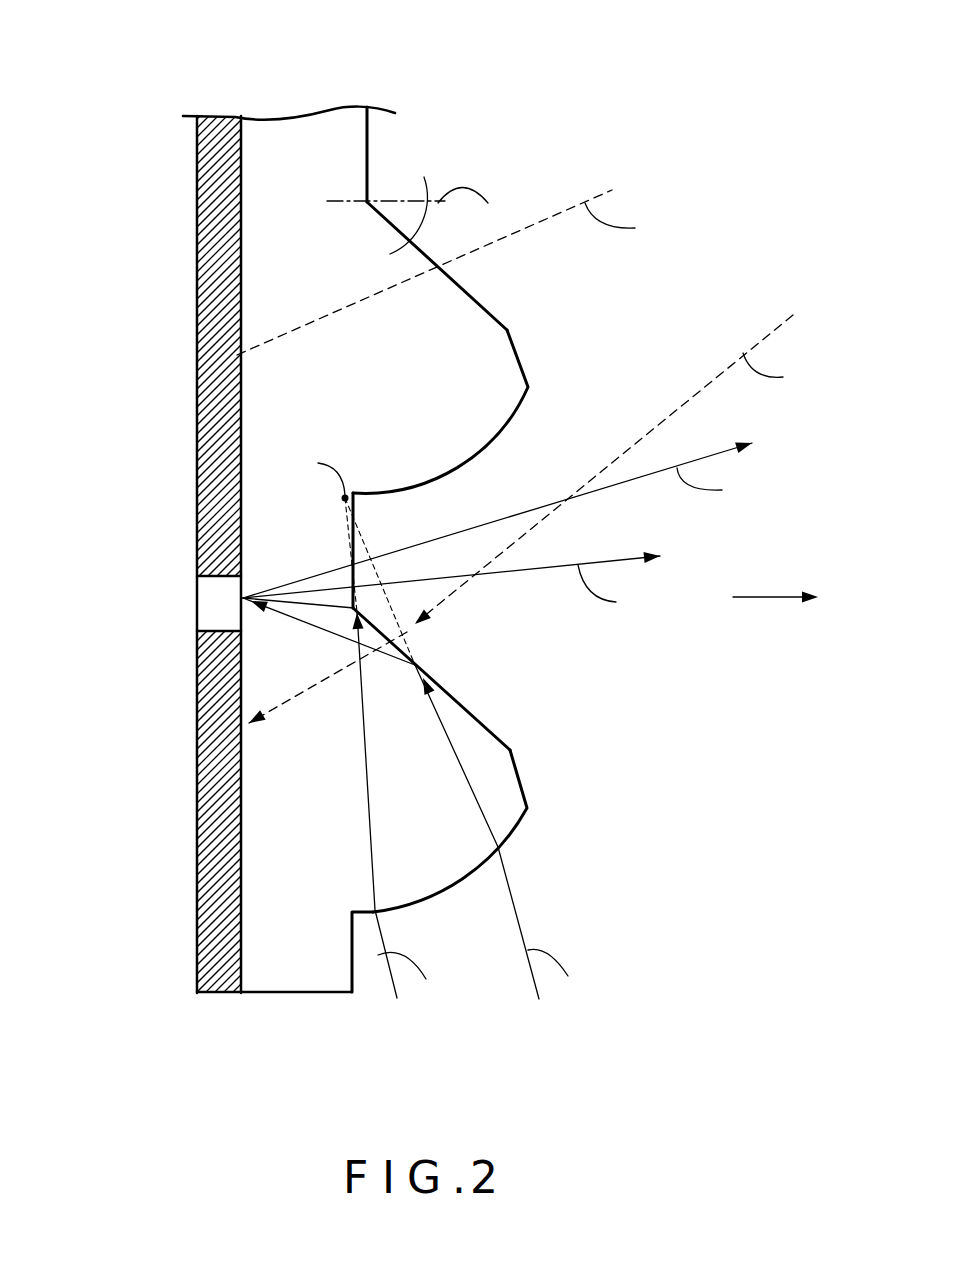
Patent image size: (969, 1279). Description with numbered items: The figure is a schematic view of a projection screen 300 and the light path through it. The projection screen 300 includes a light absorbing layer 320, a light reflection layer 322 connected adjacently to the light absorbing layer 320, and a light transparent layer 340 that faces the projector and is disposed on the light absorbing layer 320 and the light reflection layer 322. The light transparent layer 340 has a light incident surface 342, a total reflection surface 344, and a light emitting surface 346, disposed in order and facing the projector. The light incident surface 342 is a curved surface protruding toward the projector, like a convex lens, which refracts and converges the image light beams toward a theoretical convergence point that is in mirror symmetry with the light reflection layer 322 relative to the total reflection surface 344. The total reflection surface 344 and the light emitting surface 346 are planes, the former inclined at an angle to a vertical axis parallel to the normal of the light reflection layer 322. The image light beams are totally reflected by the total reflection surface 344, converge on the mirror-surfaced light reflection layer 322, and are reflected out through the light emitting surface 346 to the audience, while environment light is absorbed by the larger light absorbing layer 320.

The projection screen 300 is at (140, 80).
The light absorbing layer 320 is at (212, 993).
The light reflection layer 322 is at (205, 603).
The light transparent layer 340 is at (465, 565).
The light incident surface 342 is at (482, 452).
The total reflection surface 344 is at (487, 305).
The light emitting surface 346 is at (368, 148).